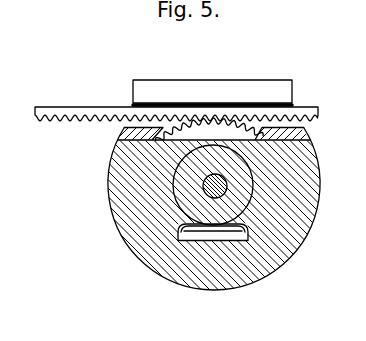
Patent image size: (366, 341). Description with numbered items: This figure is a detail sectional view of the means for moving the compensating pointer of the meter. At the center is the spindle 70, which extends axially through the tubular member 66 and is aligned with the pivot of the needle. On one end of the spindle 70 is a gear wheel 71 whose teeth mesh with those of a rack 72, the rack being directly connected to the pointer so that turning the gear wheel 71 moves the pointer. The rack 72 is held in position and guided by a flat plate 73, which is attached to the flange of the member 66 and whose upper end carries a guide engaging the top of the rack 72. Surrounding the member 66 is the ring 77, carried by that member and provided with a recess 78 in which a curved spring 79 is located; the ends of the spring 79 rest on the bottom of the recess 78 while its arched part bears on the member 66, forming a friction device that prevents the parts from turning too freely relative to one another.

The tubular member 66 is at (252, 200).
The spindle 70 is at (228, 181).
The gear wheel 71 is at (209, 133).
The rack 72 is at (88, 116).
The flat plate 73 is at (172, 114).
The ring 77 is at (108, 179).
The recess 78 is at (208, 238).
The curved spring 79 is at (246, 240).